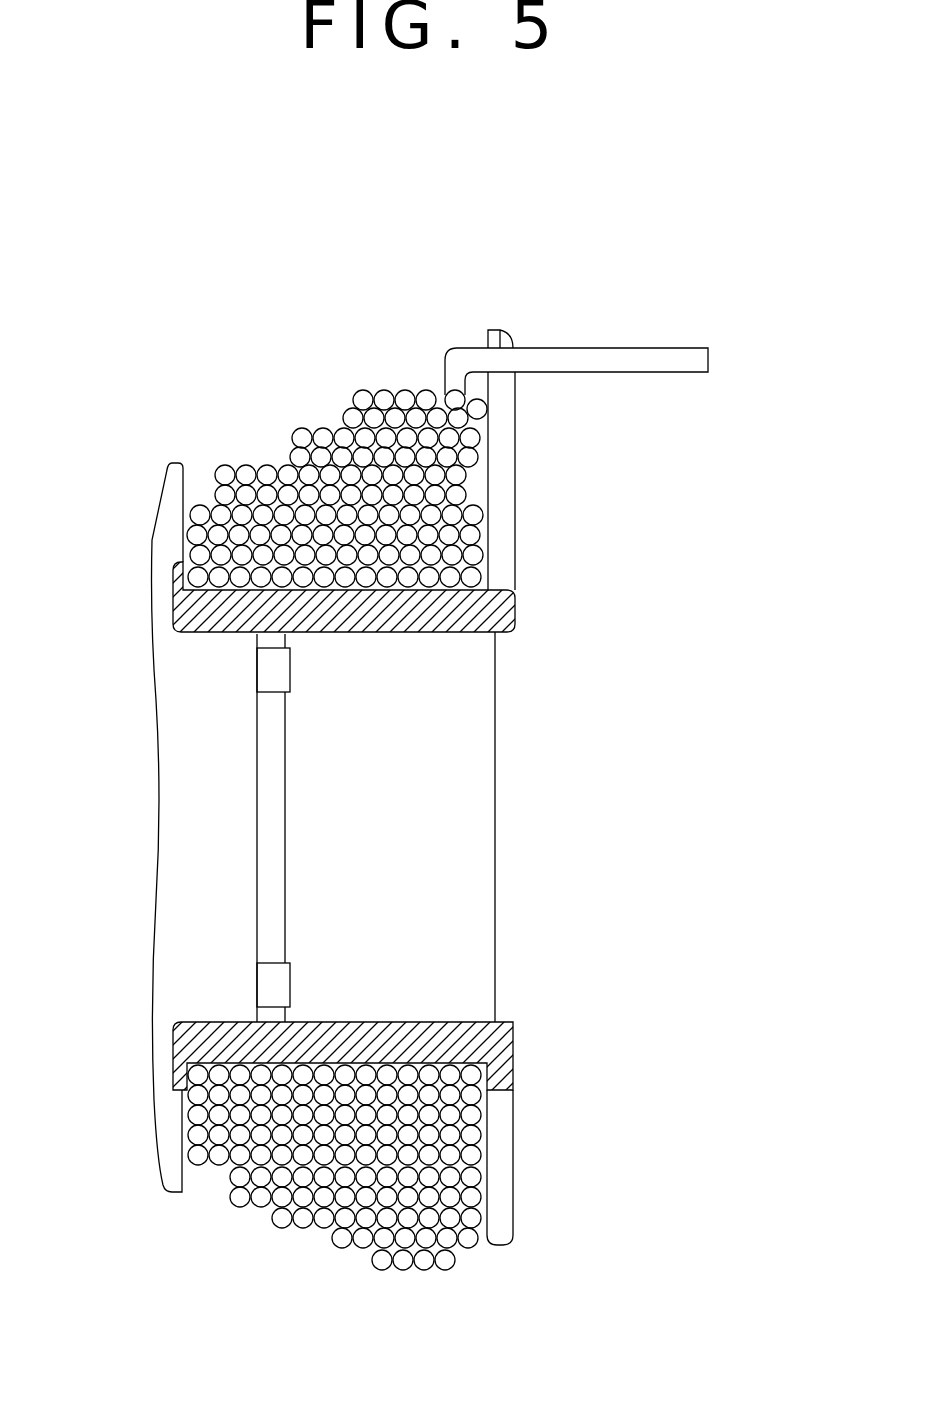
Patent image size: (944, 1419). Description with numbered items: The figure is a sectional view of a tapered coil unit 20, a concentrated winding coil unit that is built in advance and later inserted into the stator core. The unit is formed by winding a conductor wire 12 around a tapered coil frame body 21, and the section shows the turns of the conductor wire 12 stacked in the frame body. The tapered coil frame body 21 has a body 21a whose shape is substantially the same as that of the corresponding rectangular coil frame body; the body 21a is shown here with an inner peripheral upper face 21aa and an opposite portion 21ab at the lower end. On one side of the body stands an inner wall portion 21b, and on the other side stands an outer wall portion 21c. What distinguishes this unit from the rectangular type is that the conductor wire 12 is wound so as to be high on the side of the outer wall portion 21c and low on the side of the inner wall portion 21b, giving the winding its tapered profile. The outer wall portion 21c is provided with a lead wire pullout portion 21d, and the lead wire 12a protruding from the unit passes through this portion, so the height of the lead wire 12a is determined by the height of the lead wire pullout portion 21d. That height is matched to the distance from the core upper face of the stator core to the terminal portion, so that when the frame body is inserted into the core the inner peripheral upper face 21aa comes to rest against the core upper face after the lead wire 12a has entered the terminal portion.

The tapered coil unit 20 is at (673, 226).
The conductor wire 12 is at (322, 435).
The lead wire 12a is at (703, 362).
The tapered coil frame body 21 is at (490, 603).
The body 21a is at (417, 632).
The inner peripheral upper face 21aa is at (358, 632).
The lower flange 21ab is at (437, 1021).
The inner wall portion 21b is at (177, 468).
The outer wall portion 21c is at (497, 443).
The lead wire pullout portion 21d is at (500, 340).